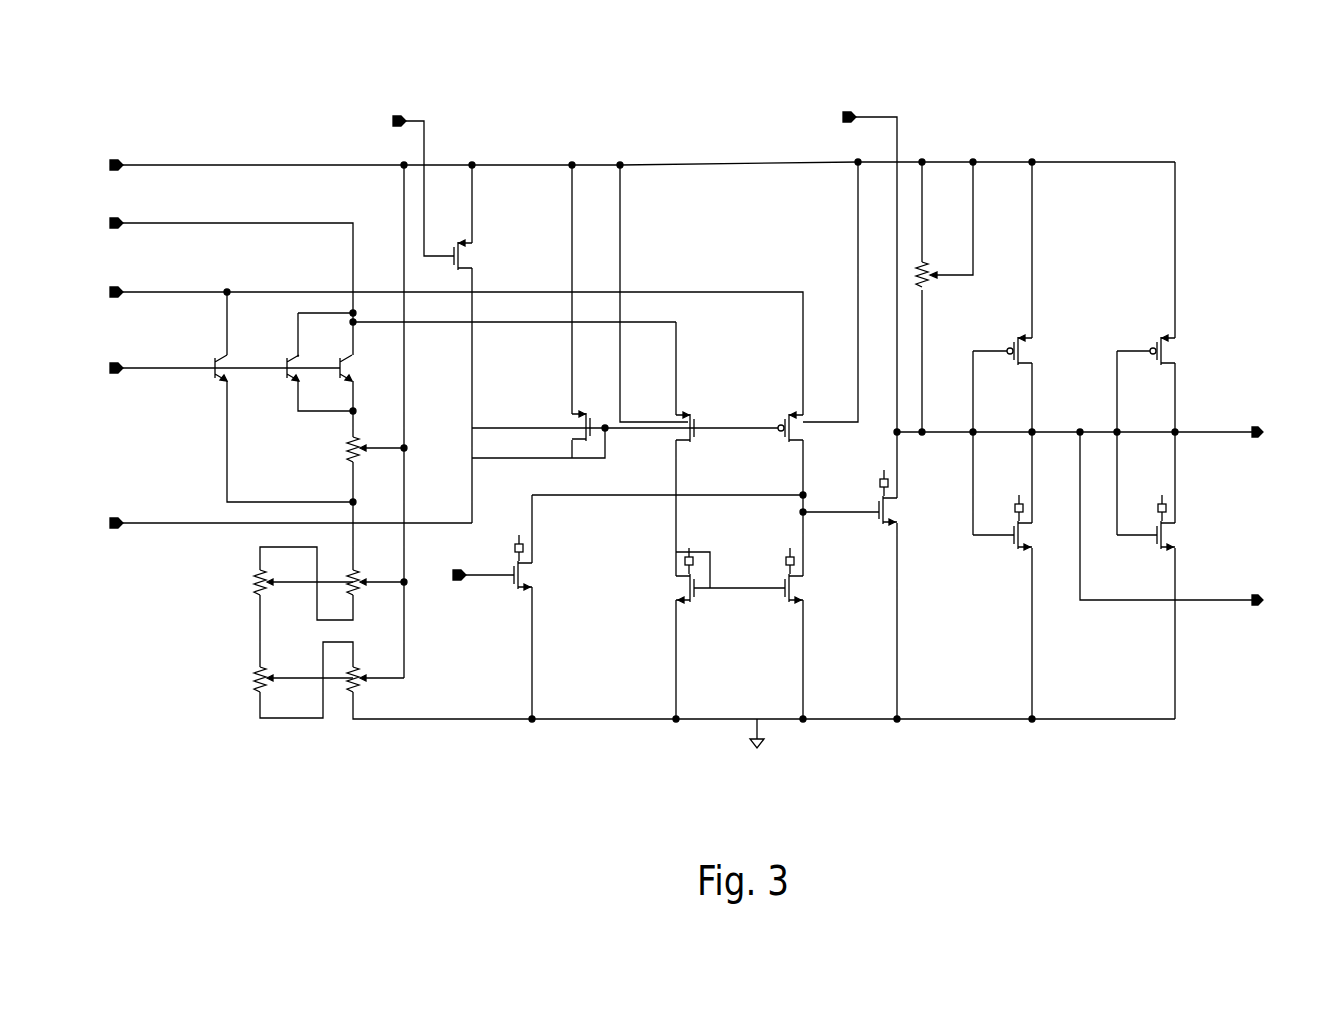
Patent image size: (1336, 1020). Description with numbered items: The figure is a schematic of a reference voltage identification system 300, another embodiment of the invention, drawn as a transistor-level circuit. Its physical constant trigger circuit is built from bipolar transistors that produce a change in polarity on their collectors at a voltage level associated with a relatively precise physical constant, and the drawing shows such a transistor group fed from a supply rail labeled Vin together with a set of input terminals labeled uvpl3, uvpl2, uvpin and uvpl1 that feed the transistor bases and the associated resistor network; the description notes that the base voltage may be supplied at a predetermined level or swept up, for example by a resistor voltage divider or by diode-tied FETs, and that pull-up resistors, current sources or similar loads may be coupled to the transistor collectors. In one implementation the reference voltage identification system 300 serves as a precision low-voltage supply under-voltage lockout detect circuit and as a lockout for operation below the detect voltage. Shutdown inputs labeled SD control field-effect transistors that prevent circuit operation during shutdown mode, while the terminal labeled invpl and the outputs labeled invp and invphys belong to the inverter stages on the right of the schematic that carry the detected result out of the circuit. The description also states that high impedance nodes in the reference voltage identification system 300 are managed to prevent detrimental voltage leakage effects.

The reference voltage identification system 300 is at (628, 32).
The input supply voltage node Vin is at (636, 151).
The undervoltage level 3 input uvpl3 is at (228, 251).
The undervoltage level 2 input uvpl2 is at (453, 336).
The undervoltage sense input uvpin is at (221, 354).
The undervoltage level 1 input uvpl1 is at (287, 507).
The shutdown input SD is at (447, 333).
The inverter enable input invpl is at (865, 292).
The inverter output invp is at (1088, 418).
The inverter physical output invphys is at (1195, 518).